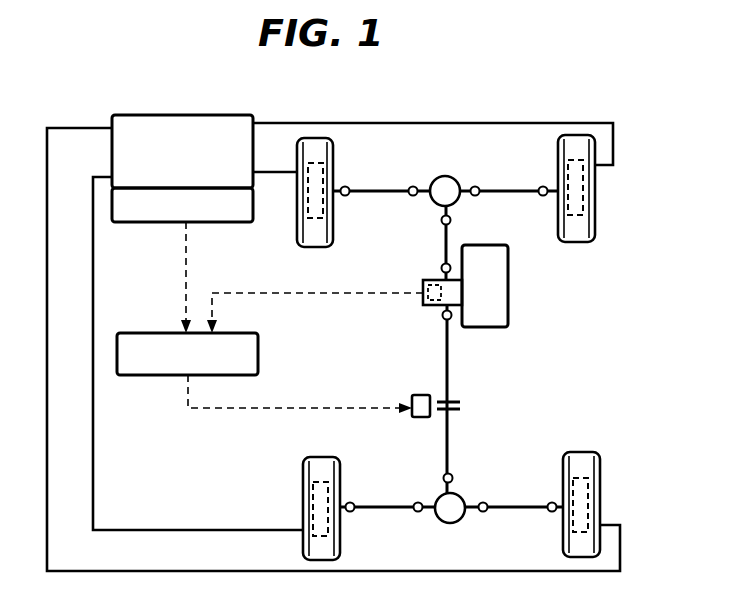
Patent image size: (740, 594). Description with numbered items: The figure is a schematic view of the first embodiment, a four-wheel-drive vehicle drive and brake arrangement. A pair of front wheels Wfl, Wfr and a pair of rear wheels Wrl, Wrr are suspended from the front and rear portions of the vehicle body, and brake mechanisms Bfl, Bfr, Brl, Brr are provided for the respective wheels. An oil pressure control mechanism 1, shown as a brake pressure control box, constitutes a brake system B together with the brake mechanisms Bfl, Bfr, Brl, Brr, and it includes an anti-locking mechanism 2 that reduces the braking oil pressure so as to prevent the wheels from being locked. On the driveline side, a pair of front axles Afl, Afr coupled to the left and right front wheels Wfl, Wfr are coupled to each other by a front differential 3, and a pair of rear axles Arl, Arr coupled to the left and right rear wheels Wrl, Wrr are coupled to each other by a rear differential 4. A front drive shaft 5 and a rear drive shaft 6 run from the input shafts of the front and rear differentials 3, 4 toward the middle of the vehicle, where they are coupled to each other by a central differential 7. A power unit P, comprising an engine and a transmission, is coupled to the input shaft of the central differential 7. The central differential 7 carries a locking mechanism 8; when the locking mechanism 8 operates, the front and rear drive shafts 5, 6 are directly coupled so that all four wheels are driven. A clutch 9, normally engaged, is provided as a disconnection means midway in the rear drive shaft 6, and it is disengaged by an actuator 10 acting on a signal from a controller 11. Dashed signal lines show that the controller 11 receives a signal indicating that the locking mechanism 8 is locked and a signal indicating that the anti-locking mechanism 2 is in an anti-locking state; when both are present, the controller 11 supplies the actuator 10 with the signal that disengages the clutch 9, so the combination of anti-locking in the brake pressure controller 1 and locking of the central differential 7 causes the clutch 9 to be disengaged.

The oil pressure control mechanism 1 is at (233, 115).
The anti-locking mechanism 2 is at (126, 222).
The brake system B is at (268, 120).
The front differential 3 is at (445, 176).
The rear differential 4 is at (450, 523).
The front drive shaft 5 is at (454, 229).
The rear drive shaft 6 is at (449, 362).
The central differential 7 is at (428, 280).
The locking mechanism 8 is at (431, 305).
The clutch 9 is at (456, 410).
The actuator 10 is at (420, 417).
The controller 11 is at (125, 375).
The power unit P is at (508, 307).
The front left wheel Wfl is at (325, 165).
The front right wheel Wfr is at (590, 226).
The rear left wheel Wrl is at (310, 461).
The rear right wheel Wrr is at (584, 456).
The brake mechanism Bfl is at (300, 215).
The brake mechanism Bfr is at (583, 190).
The brake mechanism Brl is at (318, 509).
The brake mechanism Brr is at (586, 500).
The front axle Afl is at (376, 194).
The front axle Afr is at (502, 188).
The rear axle Arl is at (373, 510).
The rear axle Arr is at (514, 510).